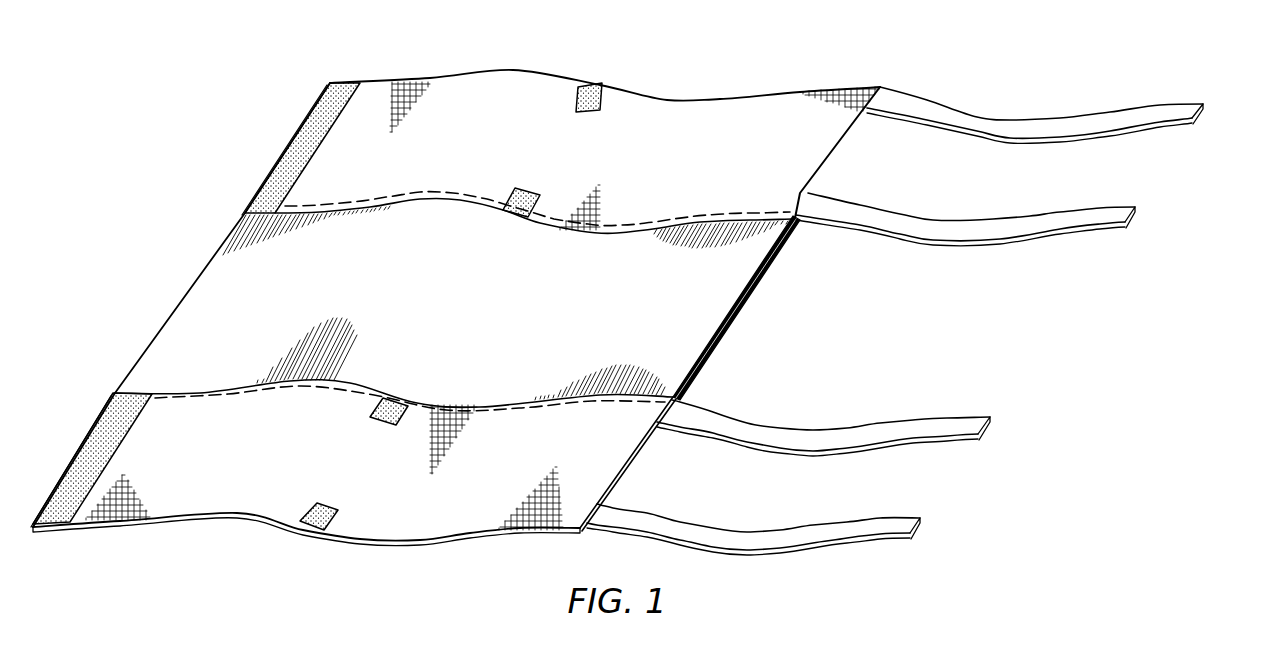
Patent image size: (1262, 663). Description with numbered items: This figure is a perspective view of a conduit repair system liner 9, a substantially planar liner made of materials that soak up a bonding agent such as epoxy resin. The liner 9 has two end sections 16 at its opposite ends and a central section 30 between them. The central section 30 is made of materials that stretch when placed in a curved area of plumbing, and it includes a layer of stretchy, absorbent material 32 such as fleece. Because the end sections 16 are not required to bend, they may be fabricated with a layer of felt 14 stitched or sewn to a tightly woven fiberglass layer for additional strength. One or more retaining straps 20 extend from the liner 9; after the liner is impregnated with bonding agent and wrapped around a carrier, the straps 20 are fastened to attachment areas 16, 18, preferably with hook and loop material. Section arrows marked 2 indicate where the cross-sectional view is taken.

The conduit repair system liner 9 is at (1065, 470).
The layer of felt 14 is at (653, 168).
The end sections 16 is at (326, 88).
The attachment areas 18 is at (601, 86).
The retaining straps 20 is at (1187, 108).
The central section 30 is at (788, 322).
The layer of stretchy, absorbent material 32 is at (468, 319).
The section line 2- 2 is at (548, 25).